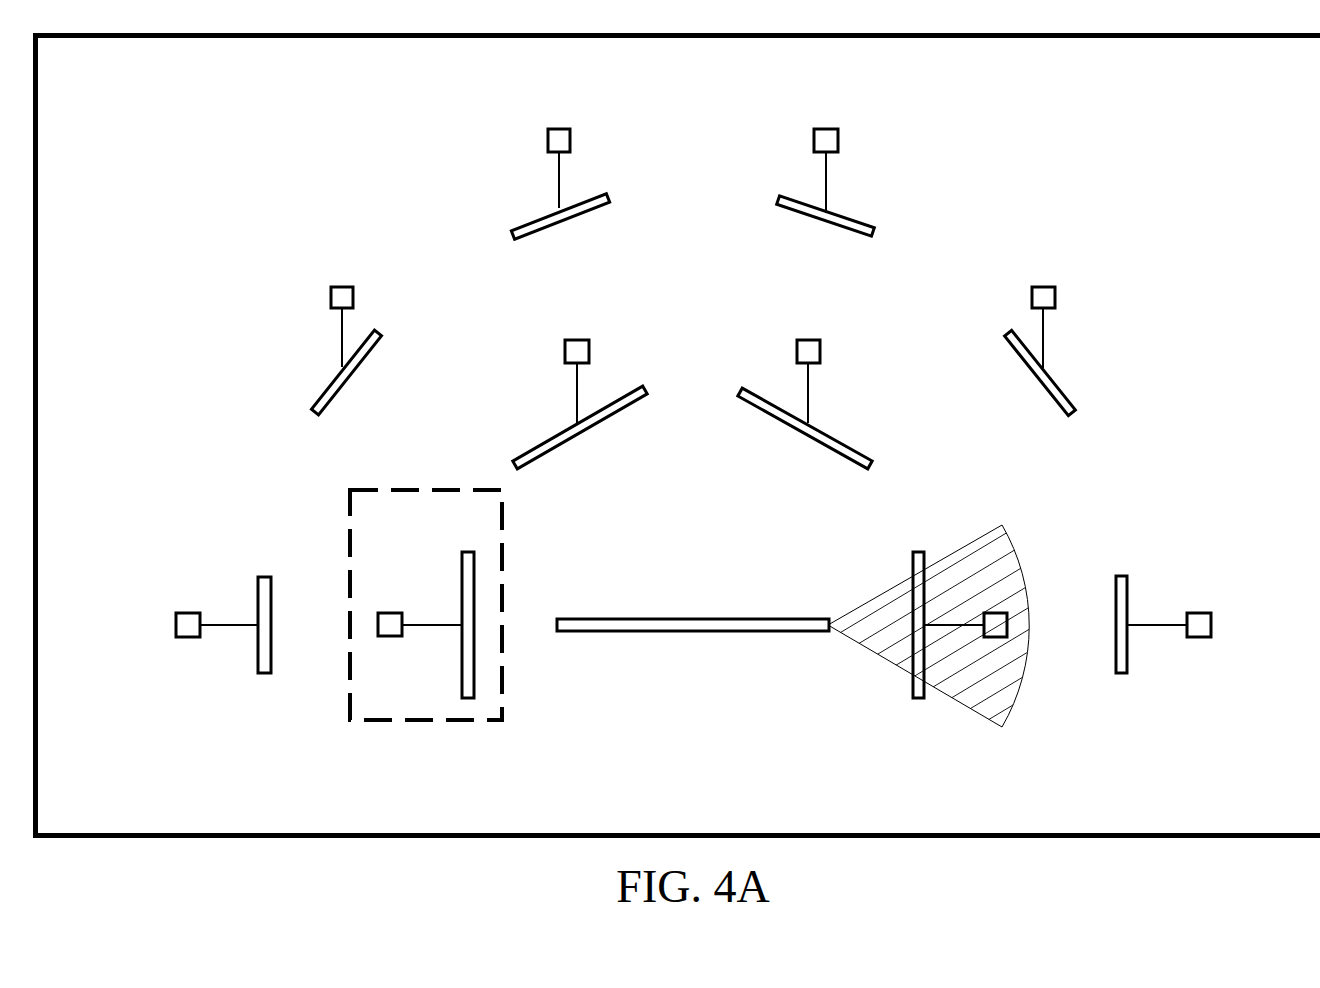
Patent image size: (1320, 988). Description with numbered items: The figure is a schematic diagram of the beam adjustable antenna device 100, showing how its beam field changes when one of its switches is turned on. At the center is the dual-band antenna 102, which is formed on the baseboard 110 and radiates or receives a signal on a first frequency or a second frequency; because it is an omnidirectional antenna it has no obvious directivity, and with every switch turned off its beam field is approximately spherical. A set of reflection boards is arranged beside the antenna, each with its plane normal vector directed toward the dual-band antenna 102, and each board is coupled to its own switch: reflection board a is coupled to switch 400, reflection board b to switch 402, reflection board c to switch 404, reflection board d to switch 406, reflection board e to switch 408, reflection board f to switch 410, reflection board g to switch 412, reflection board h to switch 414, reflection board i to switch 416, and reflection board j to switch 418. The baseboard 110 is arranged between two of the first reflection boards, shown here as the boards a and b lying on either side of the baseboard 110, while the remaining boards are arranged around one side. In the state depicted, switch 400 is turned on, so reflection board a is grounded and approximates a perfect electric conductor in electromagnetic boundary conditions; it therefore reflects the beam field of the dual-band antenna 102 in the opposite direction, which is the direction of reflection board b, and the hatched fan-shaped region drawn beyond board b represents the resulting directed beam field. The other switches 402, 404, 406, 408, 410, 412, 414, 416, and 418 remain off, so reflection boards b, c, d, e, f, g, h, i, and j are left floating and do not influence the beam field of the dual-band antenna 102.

The beam adjustable antenna device 100 is at (67, 84).
The dual-band antenna 102 is at (698, 636).
The baseboard 110 is at (693, 625).
The switch 400 is at (388, 625).
The switch 402 is at (1000, 625).
The switch 404 is at (575, 352).
The switch 406 is at (806, 352).
The switch 408 is at (187, 625).
The switch 410 is at (1196, 625).
The switch 412 is at (341, 297).
The switch 414 is at (1041, 297).
The switch 416 is at (557, 140).
The switch 418 is at (825, 140).
The reflection board a is at (466, 552).
The reflection board b is at (915, 552).
The reflection board c is at (641, 386).
The reflection board d is at (744, 390).
The reflection board e is at (264, 577).
The reflection board f is at (1121, 576).
The reflection board g is at (375, 335).
The reflection board h is at (1009, 334).
The reflection board i is at (611, 200).
The reflection board j is at (777, 200).